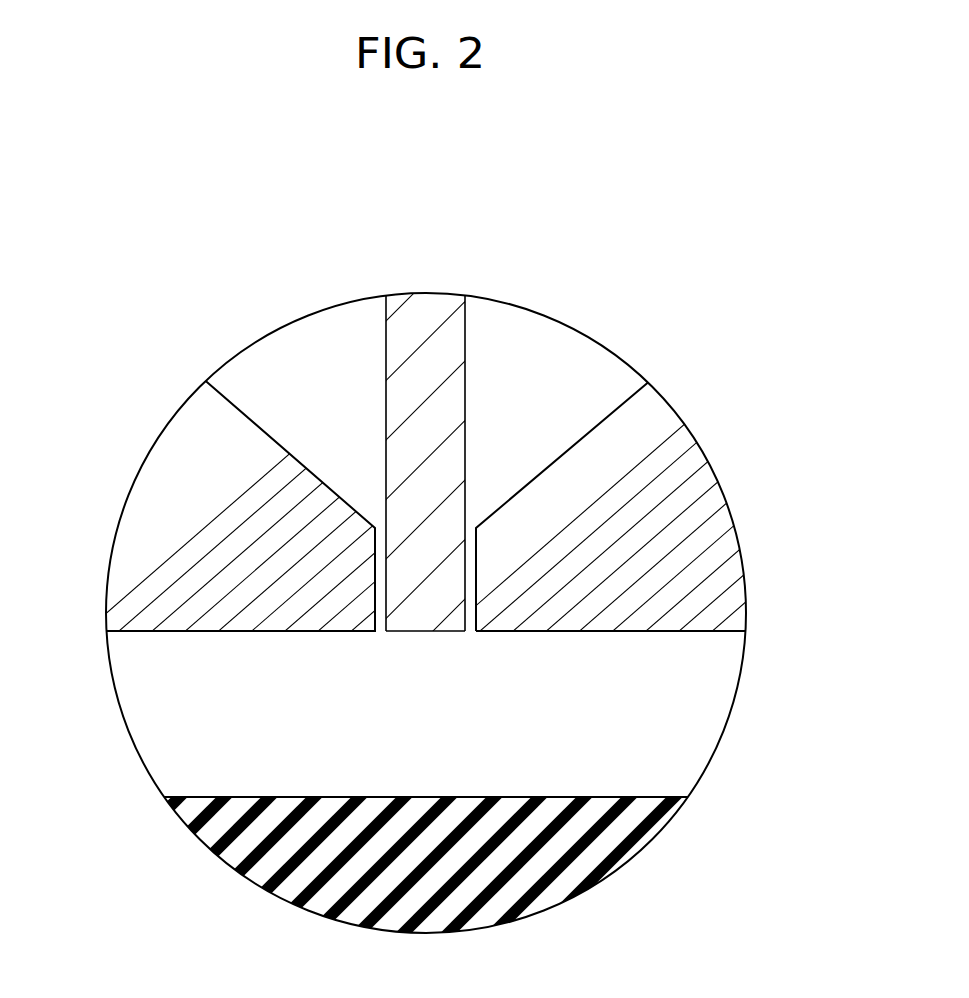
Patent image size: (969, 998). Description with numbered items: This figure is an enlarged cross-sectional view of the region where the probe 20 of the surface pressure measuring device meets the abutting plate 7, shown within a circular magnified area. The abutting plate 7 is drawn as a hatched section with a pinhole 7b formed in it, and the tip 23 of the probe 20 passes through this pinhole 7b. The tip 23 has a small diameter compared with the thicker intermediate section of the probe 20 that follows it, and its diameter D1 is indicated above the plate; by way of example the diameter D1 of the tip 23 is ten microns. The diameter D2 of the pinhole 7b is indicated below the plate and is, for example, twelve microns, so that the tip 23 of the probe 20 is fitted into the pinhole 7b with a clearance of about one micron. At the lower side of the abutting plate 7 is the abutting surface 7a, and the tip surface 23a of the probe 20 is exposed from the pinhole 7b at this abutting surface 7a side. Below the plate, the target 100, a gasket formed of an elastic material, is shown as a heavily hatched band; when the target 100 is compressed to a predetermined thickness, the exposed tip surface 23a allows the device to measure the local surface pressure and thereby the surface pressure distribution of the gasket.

The abutting plate 7 is at (180, 421).
The abutting surface 7a is at (187, 632).
The pinhole 7b is at (476, 531).
The tip 23 is at (455, 345).
The probe 20 is at (425, 463).
The tip surface 23a is at (418, 632).
The target 100 is at (555, 900).
The diameter of the tip D1 is at (465, 293).
The diameter of the pinhole D2 is at (476, 720).